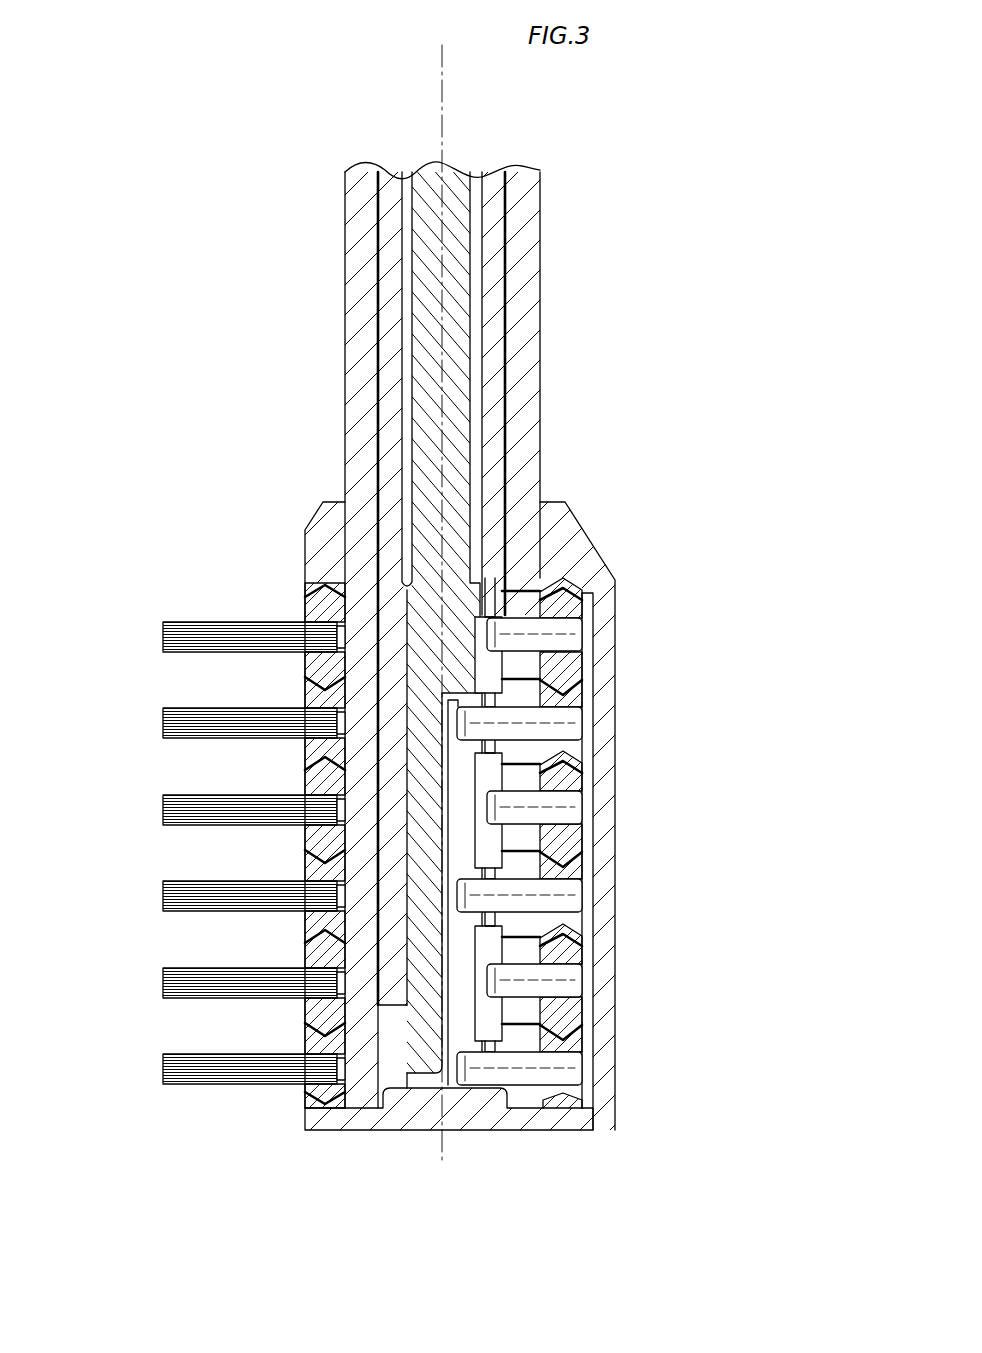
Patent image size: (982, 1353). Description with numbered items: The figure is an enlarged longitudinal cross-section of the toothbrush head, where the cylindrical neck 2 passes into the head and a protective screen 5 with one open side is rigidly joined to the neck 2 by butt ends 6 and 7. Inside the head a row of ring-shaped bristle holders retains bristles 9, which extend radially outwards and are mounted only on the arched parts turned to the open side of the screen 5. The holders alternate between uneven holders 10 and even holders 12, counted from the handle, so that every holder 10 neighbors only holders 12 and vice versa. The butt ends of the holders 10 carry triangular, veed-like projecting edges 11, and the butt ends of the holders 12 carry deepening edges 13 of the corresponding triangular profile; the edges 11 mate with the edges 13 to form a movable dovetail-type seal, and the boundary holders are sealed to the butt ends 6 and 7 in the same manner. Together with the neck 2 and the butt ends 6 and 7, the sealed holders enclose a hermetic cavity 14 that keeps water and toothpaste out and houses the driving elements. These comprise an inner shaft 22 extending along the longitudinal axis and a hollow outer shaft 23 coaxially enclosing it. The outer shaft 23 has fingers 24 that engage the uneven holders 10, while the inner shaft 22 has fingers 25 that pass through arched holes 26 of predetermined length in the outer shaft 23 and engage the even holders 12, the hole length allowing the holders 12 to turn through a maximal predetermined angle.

The cylindrical neck 2 is at (523, 443).
The protective screen 5 is at (608, 1100).
The butt end 6 is at (568, 545).
The butt end 7 is at (348, 1122).
The bristles 9 is at (185, 637).
The uneven holders 10 is at (315, 668).
The projecting edges 11 is at (562, 586).
The even holders 12 is at (315, 752).
The deepening edges 13 is at (562, 697).
The hermetic cavity 14 is at (392, 1067).
The inner shaft 22 is at (443, 288).
The outer shaft 23 is at (492, 368).
The fingers 24 is at (562, 630).
The fingers 25 is at (562, 718).
The arched holes 26 is at (487, 1033).